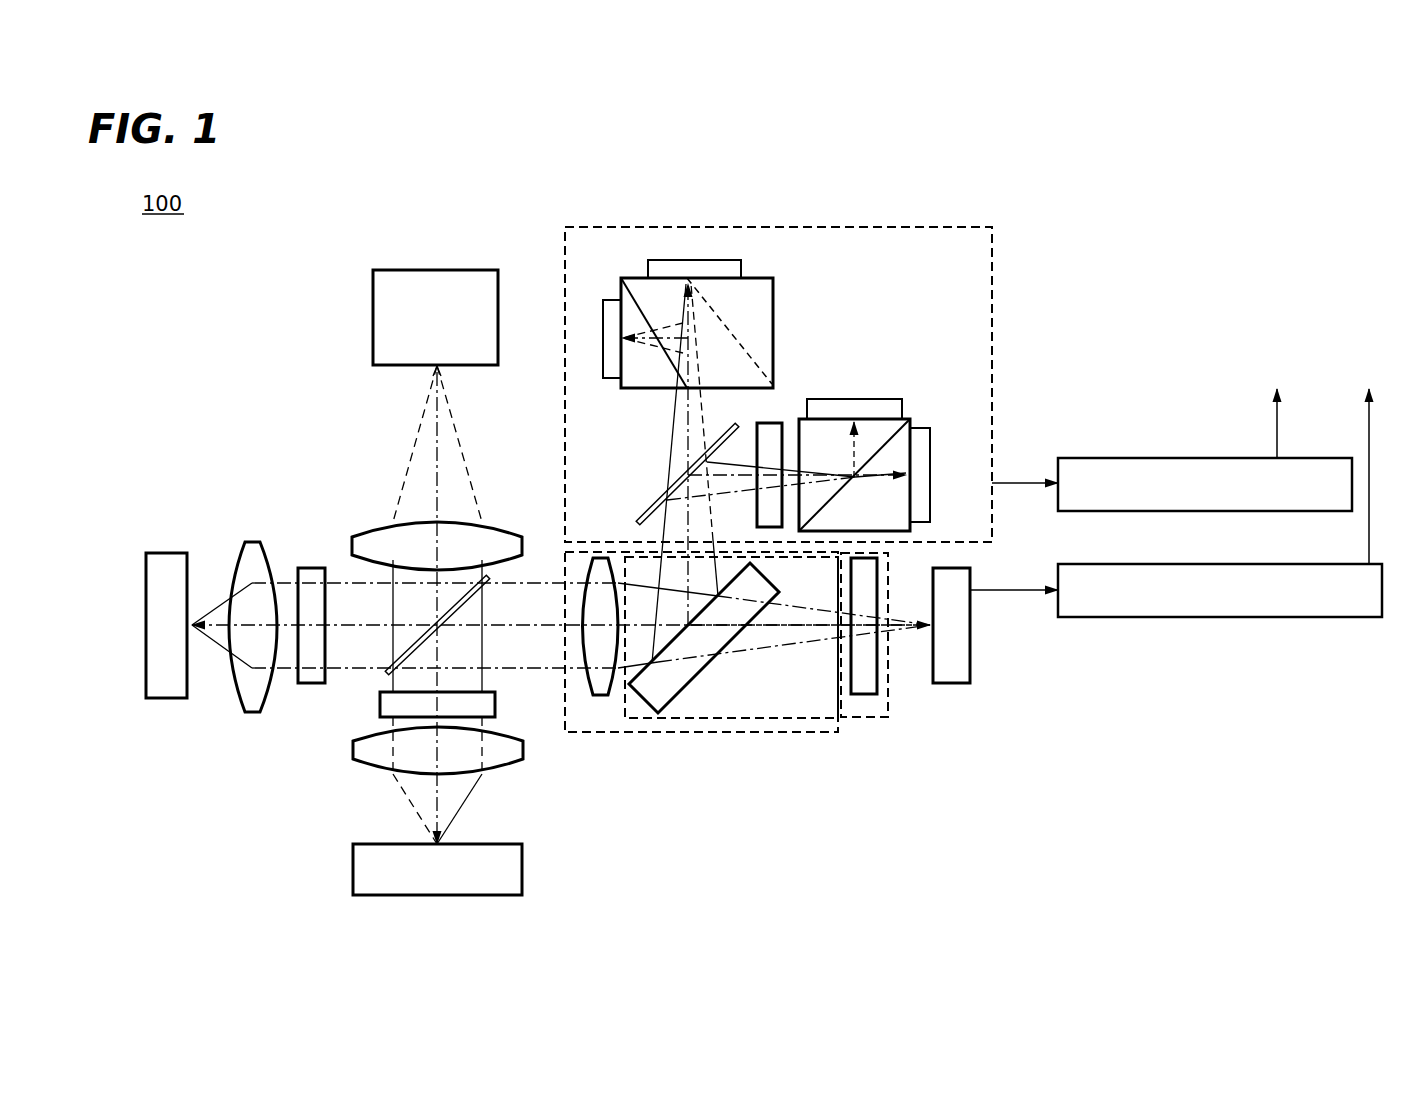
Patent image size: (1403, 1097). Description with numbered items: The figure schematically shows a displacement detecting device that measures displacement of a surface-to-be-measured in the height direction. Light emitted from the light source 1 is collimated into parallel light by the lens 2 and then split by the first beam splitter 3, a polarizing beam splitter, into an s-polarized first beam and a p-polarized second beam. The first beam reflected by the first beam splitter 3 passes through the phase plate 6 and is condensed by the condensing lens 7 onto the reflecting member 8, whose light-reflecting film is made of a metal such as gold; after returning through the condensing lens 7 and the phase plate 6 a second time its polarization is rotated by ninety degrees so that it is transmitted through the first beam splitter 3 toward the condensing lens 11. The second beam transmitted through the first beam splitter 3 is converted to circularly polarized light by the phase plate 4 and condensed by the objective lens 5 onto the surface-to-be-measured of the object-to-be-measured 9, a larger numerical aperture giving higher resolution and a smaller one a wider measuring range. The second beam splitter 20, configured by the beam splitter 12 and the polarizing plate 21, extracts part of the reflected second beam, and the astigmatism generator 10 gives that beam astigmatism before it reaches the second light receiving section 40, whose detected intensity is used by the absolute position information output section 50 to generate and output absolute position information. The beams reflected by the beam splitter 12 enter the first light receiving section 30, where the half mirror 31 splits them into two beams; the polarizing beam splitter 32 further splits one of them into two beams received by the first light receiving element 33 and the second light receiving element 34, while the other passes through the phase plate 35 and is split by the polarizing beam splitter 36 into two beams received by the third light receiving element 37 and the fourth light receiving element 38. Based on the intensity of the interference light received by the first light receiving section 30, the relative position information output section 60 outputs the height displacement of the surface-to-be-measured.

The light source 1 is at (437, 270).
The lens 2 is at (490, 525).
The first beam splitter 3 is at (489, 577).
The phase plate 4 is at (495, 702).
The objective lens 5 is at (523, 748).
The phase plate 6 is at (312, 568).
The condensing lens 7 is at (252, 542).
The reflecting member 8 is at (168, 553).
The object-to-be-measured 9 is at (522, 870).
The astigmatism generator 10 is at (820, 732).
The condensing lens 11 is at (600, 695).
The beam splitter 12 is at (660, 713).
The second beam splitter 20 is at (870, 717).
The polarizing plate 21 is at (877, 684).
The first light receiving section 30 is at (920, 227).
The half mirror 31 is at (653, 505).
The polarizing beam splitter 32 is at (760, 278).
The first light receiving element 33 is at (603, 338).
The second light receiving element 34 is at (690, 260).
The phase plate 35 is at (770, 423).
The polarizing beam splitter 36 is at (905, 419).
The third light receiving element 37 is at (845, 399).
The fourth light receiving element 38 is at (930, 470).
The second light receiving section 40 is at (970, 664).
The absolute position information output section 50 is at (1222, 564).
The relative position information output section 60 is at (1185, 458).